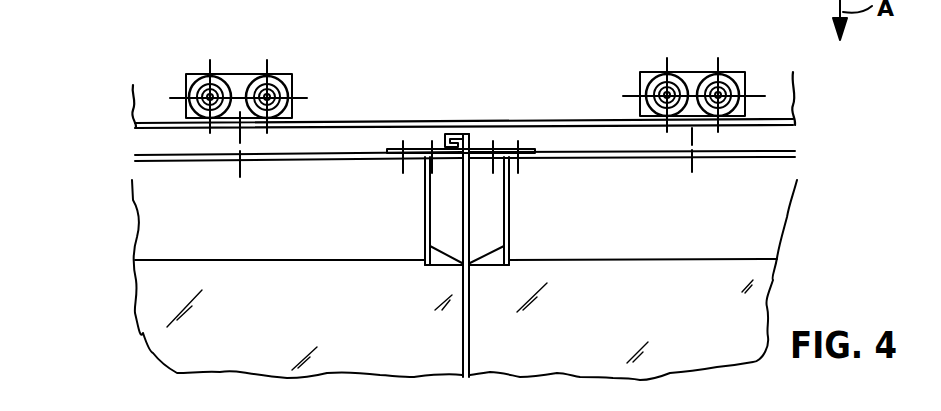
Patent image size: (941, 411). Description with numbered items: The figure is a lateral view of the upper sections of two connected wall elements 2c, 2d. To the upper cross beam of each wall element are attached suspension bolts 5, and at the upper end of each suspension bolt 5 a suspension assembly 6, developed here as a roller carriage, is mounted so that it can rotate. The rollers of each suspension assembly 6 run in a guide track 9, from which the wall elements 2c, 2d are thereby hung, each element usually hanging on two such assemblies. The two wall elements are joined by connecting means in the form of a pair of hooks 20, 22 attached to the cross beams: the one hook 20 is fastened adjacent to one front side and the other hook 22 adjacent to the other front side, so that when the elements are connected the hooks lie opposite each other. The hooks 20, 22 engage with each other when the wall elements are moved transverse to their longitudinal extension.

The guide rail 9 is at (501, 0).
The roller carriage 6 is at (242, 78).
The hanger bolt 5 is at (243, 148).
The glass pane 2c is at (345, 323).
The glass pane 2d is at (640, 317).
The clamping bracket 22 is at (418, 147).
The joint strip 20 is at (474, 138).